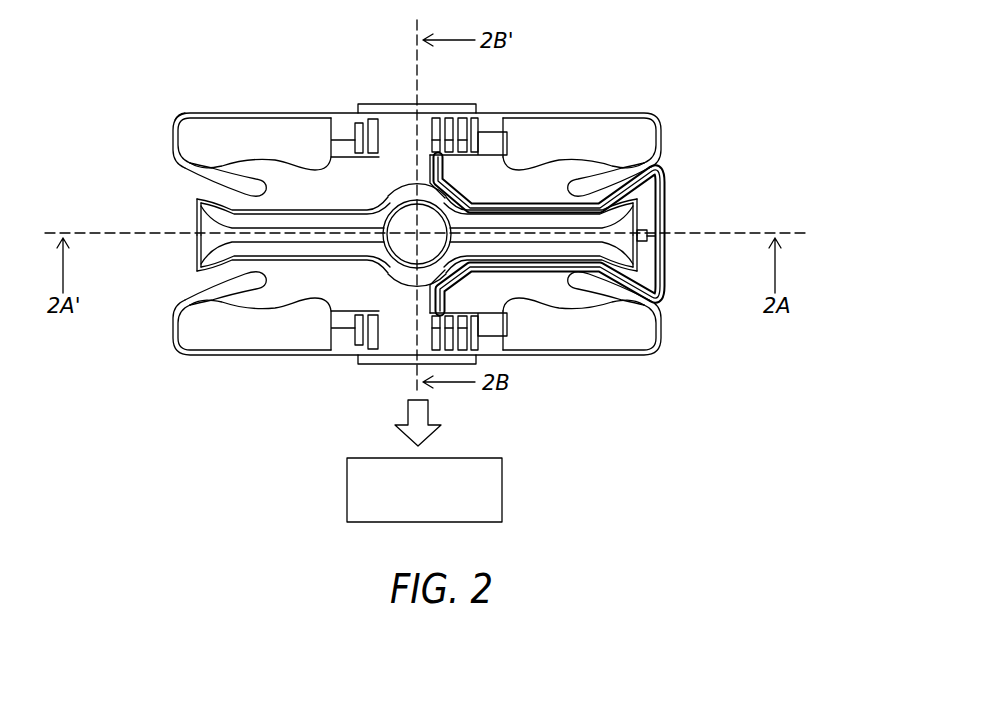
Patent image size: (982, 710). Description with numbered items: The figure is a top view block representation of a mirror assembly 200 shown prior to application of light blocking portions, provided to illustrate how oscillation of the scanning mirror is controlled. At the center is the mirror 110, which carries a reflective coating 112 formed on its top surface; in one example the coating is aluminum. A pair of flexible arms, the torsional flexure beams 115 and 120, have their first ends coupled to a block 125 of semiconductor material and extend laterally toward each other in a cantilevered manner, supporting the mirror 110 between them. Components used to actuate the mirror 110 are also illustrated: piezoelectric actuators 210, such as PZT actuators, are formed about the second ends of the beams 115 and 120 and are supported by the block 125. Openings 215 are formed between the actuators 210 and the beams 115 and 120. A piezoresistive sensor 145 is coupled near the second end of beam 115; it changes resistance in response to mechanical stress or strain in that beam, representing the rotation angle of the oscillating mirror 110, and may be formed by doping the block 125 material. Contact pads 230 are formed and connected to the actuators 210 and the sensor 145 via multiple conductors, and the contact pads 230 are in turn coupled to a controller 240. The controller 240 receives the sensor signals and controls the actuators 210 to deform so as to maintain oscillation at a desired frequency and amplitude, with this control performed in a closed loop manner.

The mirror assembly 200 is at (734, 70).
The piezoelectric actuators 210 is at (248, 113).
The openings 215 is at (172, 162).
The block 125 is at (180, 116).
The torsional flexure beam 120 is at (322, 222).
The contact pads 230 is at (372, 108).
The reflective coating 112 is at (410, 197).
The mirror 110 is at (487, 126).
The torsional flexure beam 115 is at (530, 203).
The piezoresistive sensor 145 is at (664, 243).
The controller 240 is at (372, 458).